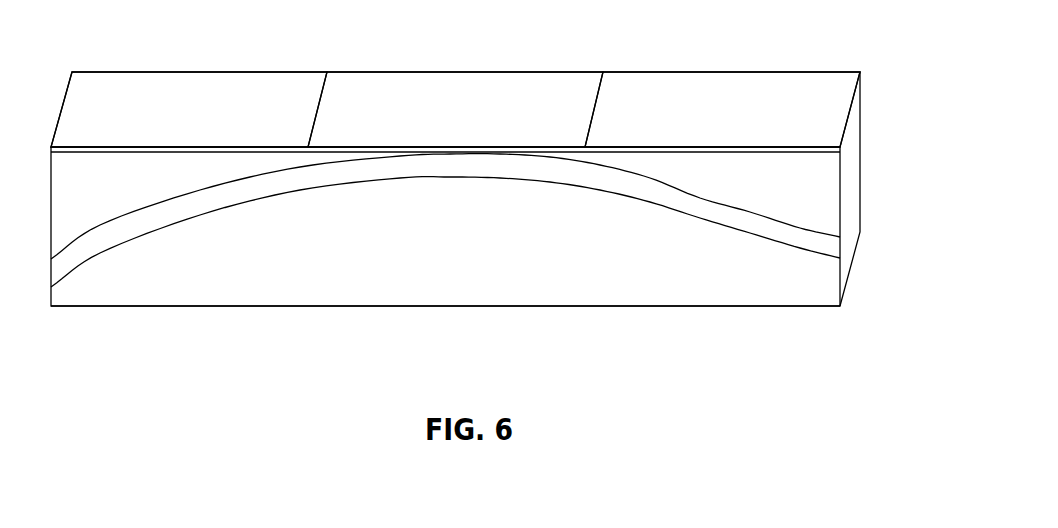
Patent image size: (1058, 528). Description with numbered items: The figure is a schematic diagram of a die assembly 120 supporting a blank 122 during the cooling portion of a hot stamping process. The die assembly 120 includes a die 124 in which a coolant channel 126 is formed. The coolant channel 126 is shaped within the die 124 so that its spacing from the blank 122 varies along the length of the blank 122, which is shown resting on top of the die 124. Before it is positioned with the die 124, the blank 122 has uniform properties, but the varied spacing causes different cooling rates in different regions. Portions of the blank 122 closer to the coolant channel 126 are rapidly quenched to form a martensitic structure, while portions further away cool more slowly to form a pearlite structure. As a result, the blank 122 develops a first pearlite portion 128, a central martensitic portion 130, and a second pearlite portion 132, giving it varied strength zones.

The die assembly 120 is at (843, 308).
The blank 122 is at (860, 118).
The die 124 is at (540, 306).
The coolant channel 126 is at (490, 178).
The first pearlite portion 128 is at (103, 97).
The martensitic portion 130 is at (347, 97).
The second pearlite portion 132 is at (627, 97).